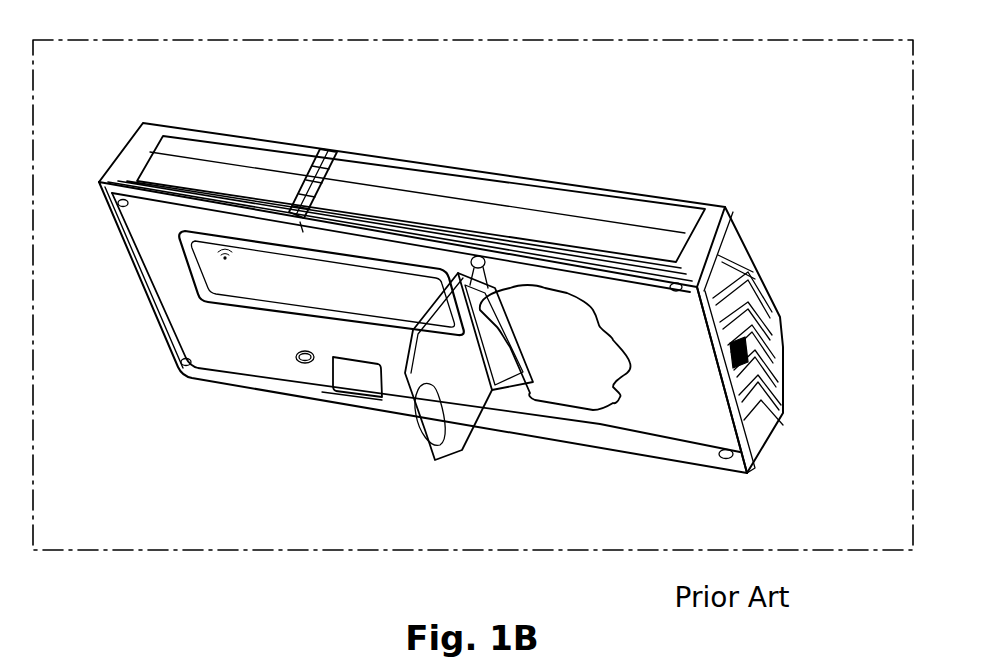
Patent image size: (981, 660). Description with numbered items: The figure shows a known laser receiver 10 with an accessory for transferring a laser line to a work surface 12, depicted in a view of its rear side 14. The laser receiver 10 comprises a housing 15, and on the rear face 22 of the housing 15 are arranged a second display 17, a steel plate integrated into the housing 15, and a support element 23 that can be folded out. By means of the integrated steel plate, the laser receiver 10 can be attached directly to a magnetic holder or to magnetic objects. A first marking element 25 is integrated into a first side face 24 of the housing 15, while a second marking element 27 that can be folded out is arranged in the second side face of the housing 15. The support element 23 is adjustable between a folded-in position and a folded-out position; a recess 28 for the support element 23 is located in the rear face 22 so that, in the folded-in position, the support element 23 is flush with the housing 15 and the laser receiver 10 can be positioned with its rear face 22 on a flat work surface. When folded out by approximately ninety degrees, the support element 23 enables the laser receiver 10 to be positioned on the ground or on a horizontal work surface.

The laser receiver 10 is at (737, 166).
The work surface 12 is at (828, 213).
The rear side 14 is at (190, 368).
The housing 15 is at (630, 227).
The second display 17 is at (256, 280).
The rear face 22 is at (681, 410).
The support element 23 is at (437, 456).
The first side face 24 is at (492, 208).
The first marking element 25 is at (320, 149).
The second marking element 27 is at (333, 405).
The recess 28 is at (568, 375).